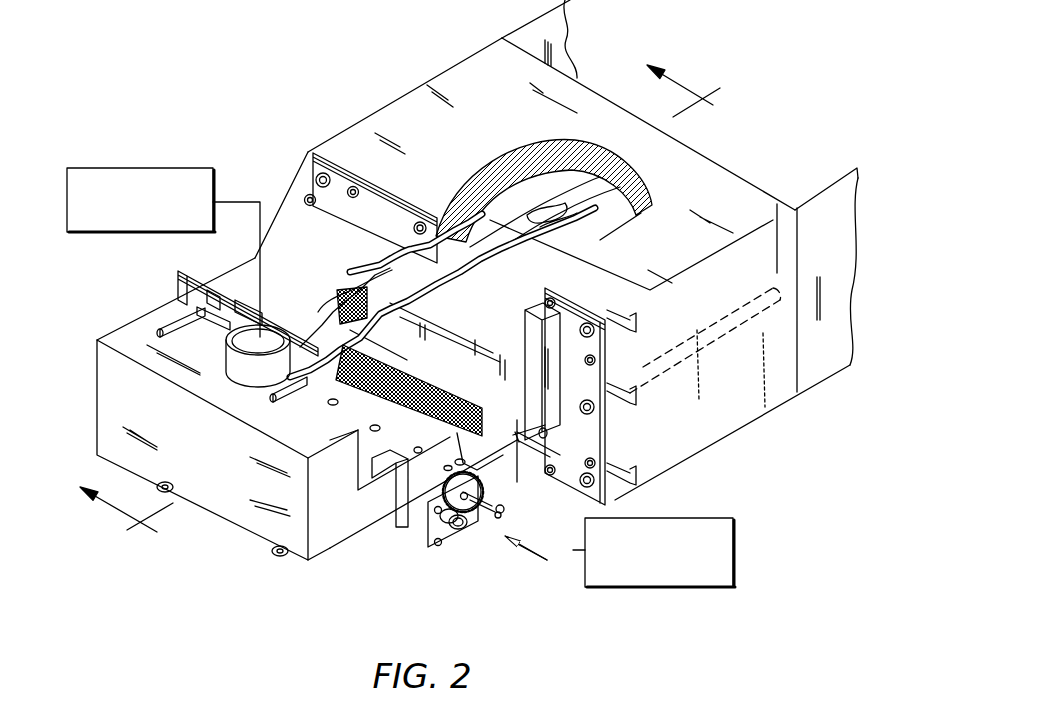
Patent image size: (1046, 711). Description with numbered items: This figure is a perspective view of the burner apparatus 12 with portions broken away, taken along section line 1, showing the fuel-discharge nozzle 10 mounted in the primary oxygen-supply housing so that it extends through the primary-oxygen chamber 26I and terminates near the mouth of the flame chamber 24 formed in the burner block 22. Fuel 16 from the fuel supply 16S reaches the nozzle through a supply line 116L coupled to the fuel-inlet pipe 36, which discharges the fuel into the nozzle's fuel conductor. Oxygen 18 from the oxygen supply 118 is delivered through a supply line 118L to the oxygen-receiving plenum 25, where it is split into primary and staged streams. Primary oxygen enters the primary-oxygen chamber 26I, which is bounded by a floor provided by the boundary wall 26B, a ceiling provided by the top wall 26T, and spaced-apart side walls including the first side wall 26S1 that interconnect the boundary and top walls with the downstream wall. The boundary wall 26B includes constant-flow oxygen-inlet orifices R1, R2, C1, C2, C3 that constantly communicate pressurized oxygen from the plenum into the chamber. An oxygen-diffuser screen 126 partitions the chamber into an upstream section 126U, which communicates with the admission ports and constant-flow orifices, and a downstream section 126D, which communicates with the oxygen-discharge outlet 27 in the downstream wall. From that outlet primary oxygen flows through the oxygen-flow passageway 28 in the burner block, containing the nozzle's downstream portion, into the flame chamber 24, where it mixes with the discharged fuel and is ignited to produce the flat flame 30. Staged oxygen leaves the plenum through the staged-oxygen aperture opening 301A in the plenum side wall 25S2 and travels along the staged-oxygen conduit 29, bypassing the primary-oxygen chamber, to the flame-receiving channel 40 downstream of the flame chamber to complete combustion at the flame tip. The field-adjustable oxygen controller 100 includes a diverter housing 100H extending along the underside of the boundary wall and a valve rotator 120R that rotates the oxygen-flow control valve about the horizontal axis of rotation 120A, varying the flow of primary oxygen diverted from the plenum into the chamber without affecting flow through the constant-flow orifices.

The section line 1 is at (415, 314).
The fuel-discharge nozzle 10 is at (386, 280).
The burner apparatus 12 is at (765, 190).
The fuel 16 is at (273, 213).
The fuel supply 16S is at (112, 167).
The oxygen 18 is at (490, 540).
The burner block 22 is at (517, 75).
The flame chamber 24 is at (610, 198).
The oxygen-receiving plenum 25 is at (516, 482).
The side wall of oxygen-receiving plenum 25S2 is at (607, 443).
The boundary wall 26B is at (387, 268).
The primary-oxygen chamber 26I is at (586, 275).
The first side wall 26S1 is at (370, 492).
The top wall 26T is at (297, 237).
The oxygen-discharge outlet 27 is at (403, 270).
The oxygen-flow passageway 28 is at (468, 258).
The staged-oxygen conduit 29 is at (710, 362).
The flame 30 is at (533, 213).
The fuel-inlet pipe 36 is at (245, 372).
The flame-receiving channel 40 is at (588, 70).
The field-adjustable oxygen controller 100 is at (398, 552).
The diverter housing 100H is at (410, 530).
The supply line 116L is at (258, 233).
The oxygen supply 118 is at (678, 588).
The supply line 118L is at (573, 550).
The axis of rotation 120A is at (490, 540).
The valve rotator 120R is at (482, 537).
The oxygen-diffuser screen 126 is at (441, 398).
The downstream section 126D is at (477, 388).
The upstream section 126U is at (334, 378).
The staged-oxygen aperture opening 301A is at (548, 440).
The constant-flow oxygen-inlet orifice C1 is at (417, 447).
The constant-flow oxygen-inlet orifice C2 is at (374, 425).
The constant-flow oxygen-inlet orifice C3 is at (317, 397).
The constant-flow oxygen-inlet orifice R1 is at (377, 477).
The constant-flow oxygen-inlet orifice R2 is at (463, 455).